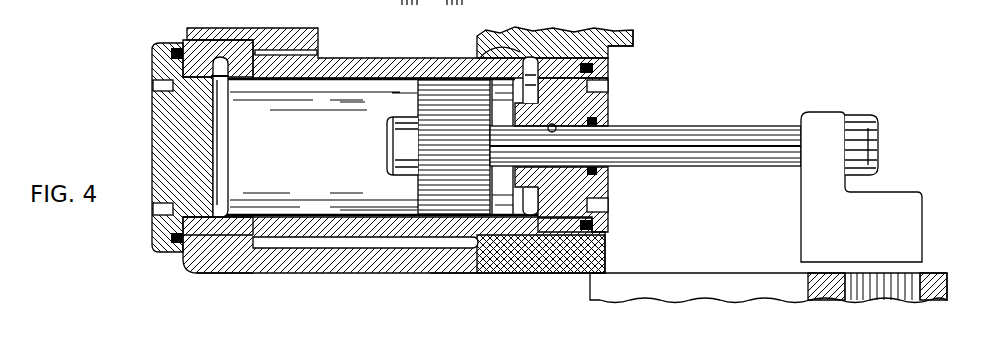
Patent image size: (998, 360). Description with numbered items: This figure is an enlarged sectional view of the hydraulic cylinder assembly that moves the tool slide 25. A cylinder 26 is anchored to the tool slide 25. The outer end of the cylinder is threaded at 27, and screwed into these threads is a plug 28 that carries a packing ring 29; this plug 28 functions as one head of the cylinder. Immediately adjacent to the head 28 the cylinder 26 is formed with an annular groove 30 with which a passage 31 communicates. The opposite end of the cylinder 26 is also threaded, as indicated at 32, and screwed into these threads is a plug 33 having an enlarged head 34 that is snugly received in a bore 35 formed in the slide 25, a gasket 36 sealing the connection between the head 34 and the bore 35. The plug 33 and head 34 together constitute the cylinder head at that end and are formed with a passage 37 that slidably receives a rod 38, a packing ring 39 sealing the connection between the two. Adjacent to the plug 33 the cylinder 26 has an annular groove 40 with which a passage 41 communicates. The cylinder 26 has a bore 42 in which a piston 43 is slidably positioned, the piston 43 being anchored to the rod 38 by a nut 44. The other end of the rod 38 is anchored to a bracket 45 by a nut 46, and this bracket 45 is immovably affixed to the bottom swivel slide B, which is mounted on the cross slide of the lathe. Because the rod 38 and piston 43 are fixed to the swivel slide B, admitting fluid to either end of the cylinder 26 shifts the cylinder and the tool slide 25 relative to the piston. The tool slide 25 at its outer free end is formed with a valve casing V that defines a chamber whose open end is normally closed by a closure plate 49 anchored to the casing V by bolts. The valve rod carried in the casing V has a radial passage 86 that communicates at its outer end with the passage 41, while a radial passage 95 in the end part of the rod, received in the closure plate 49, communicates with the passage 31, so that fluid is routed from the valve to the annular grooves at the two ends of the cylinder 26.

The tool slide 25 is at (634, 40).
The cylinder 26 is at (368, 58).
The threaded outer end 27 is at (200, 222).
The plug 28 is at (160, 121).
The packing ring 29 is at (178, 252).
The piston 30 is at (222, 132).
The passage 31 is at (230, 72).
The threaded opposite end 32 is at (550, 218).
The plug 33 is at (609, 190).
The enlarged head 34 is at (610, 73).
The bore 35 is at (521, 222).
The gasket 36 is at (607, 225).
The passage 37 is at (553, 124).
The rod 38 is at (727, 130).
The packing ring 39 is at (609, 113).
The annular groove 40 is at (561, 199).
The passage 41 is at (555, 44).
The bore 42 is at (312, 216).
The piston 43 is at (440, 147).
The nut 44 is at (407, 172).
The bracket 45 is at (812, 212).
The nut 46 is at (872, 122).
The closure plate 49 is at (217, 268).
The radial passage 86 is at (479, 39).
The radial passage 95 is at (232, 78).
The valve casing V is at (471, 274).
The bottom swivel slide B is at (938, 273).